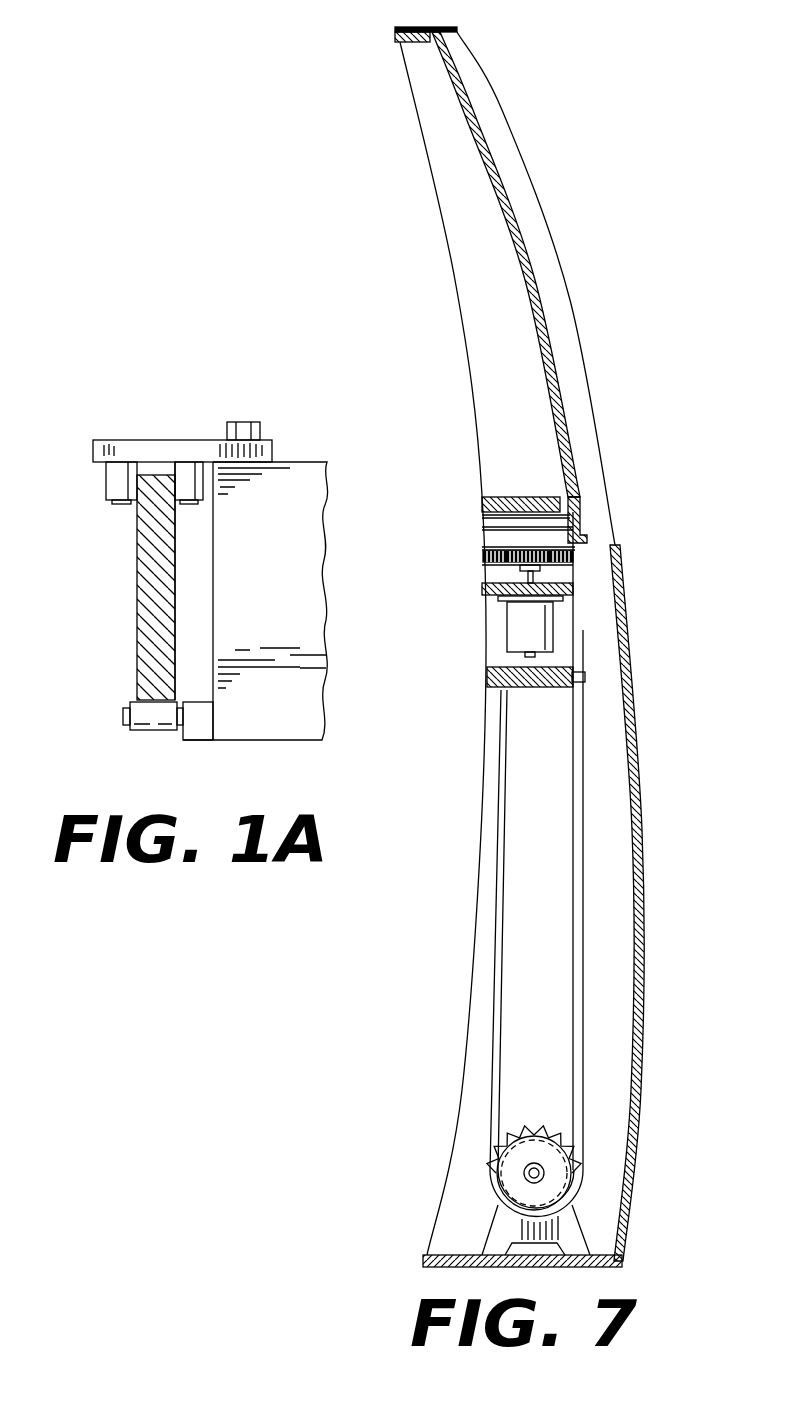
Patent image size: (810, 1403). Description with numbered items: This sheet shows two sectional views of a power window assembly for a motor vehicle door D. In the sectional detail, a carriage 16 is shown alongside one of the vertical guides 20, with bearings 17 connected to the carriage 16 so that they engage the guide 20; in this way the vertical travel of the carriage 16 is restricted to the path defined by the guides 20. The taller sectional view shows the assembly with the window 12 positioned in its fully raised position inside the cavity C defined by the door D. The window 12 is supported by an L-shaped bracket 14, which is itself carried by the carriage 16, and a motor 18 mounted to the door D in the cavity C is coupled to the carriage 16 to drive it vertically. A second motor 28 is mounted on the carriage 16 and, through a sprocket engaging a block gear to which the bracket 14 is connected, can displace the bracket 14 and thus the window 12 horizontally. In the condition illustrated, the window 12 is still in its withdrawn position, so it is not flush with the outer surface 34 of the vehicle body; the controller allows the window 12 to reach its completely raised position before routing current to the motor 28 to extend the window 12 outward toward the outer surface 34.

In FIG. 7, the window 12 is at (540, 312).
In FIG. 7, the L-shaped bracket 14 is at (587, 537).
In FIG. 1A, the carriage 16 is at (281, 596).
In FIG. 7, the carriage 16 is at (472, 575).
In FIG. 1A, the bearings 17 is at (113, 478).
In FIG. 7, the motor 18 is at (580, 1217).
In FIG. 1A, the vertical guides 20 is at (146, 593).
In FIG. 7, the second motor 28 is at (543, 627).
In FIG. 7, the outer surface 34 is at (637, 758).
In FIG. 7, the cavity C is at (543, 1010).
In FIG. 7, the motor vehicle door D is at (468, 50).